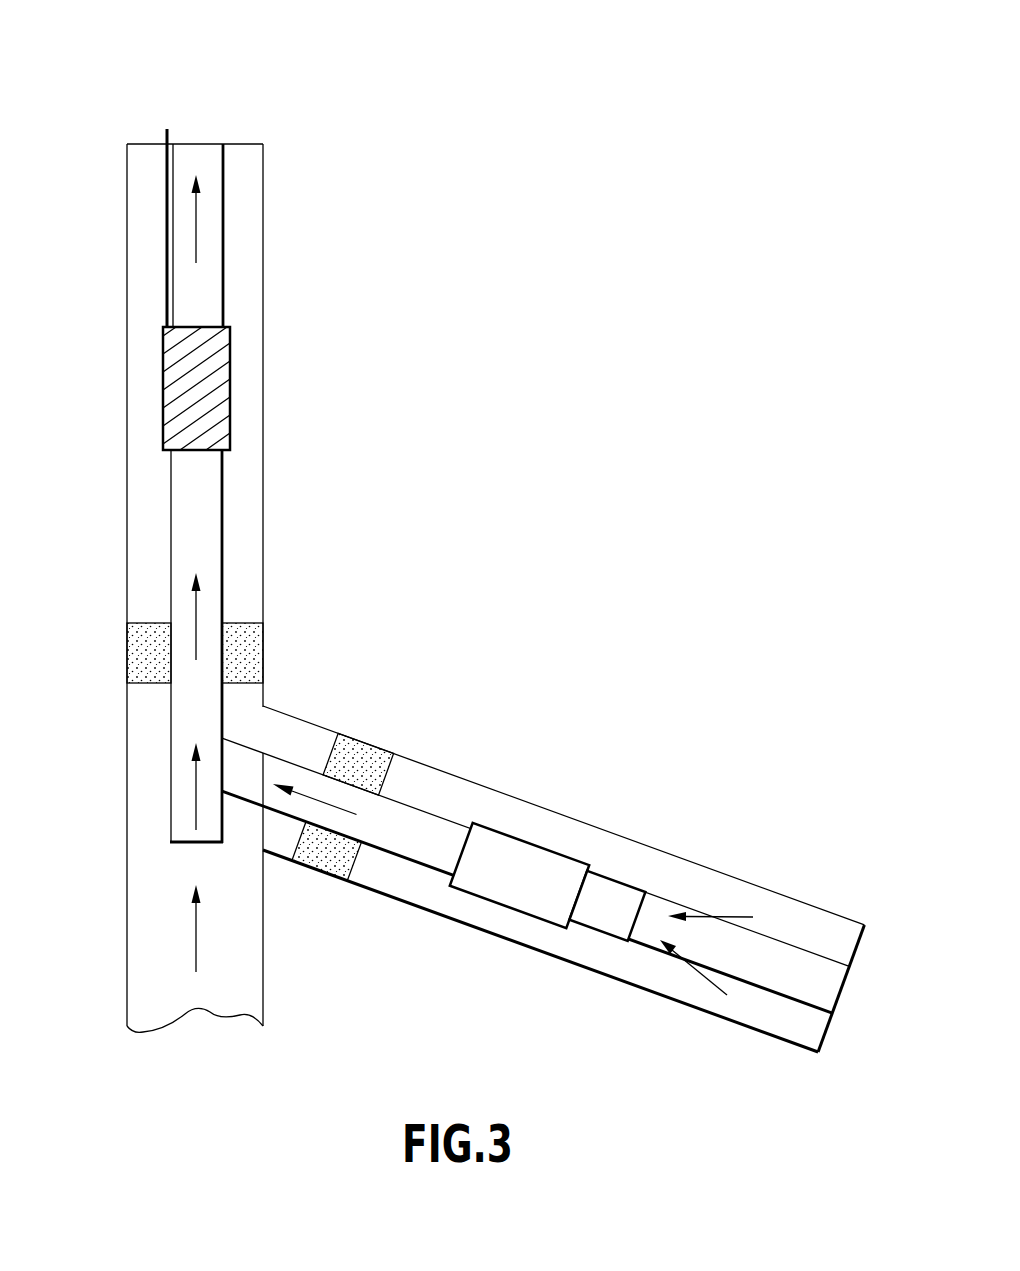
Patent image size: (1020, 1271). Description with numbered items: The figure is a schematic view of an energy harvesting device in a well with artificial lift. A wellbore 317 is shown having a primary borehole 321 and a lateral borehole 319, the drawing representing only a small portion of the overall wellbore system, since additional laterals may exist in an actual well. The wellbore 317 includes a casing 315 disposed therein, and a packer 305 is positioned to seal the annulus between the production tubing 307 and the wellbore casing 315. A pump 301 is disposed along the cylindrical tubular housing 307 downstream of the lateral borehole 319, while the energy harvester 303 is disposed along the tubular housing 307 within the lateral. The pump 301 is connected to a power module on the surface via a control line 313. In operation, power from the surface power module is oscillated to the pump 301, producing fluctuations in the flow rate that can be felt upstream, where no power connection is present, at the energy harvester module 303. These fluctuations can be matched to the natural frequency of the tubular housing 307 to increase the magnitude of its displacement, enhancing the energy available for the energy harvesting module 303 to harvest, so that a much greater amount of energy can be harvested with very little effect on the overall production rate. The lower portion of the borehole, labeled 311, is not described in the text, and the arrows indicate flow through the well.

The pump 301 is at (231, 378).
The energy harvester 303 is at (523, 865).
The packer 305 is at (126, 655).
The production tubing 307 is at (223, 500).
The main wellbore lower section 311 is at (197, 1050).
The control line 313 is at (167, 253).
The casing 315 is at (125, 400).
The wellbore 317 is at (207, 123).
The lateral borehole 319 is at (733, 877).
The primary borehole 321 is at (263, 277).